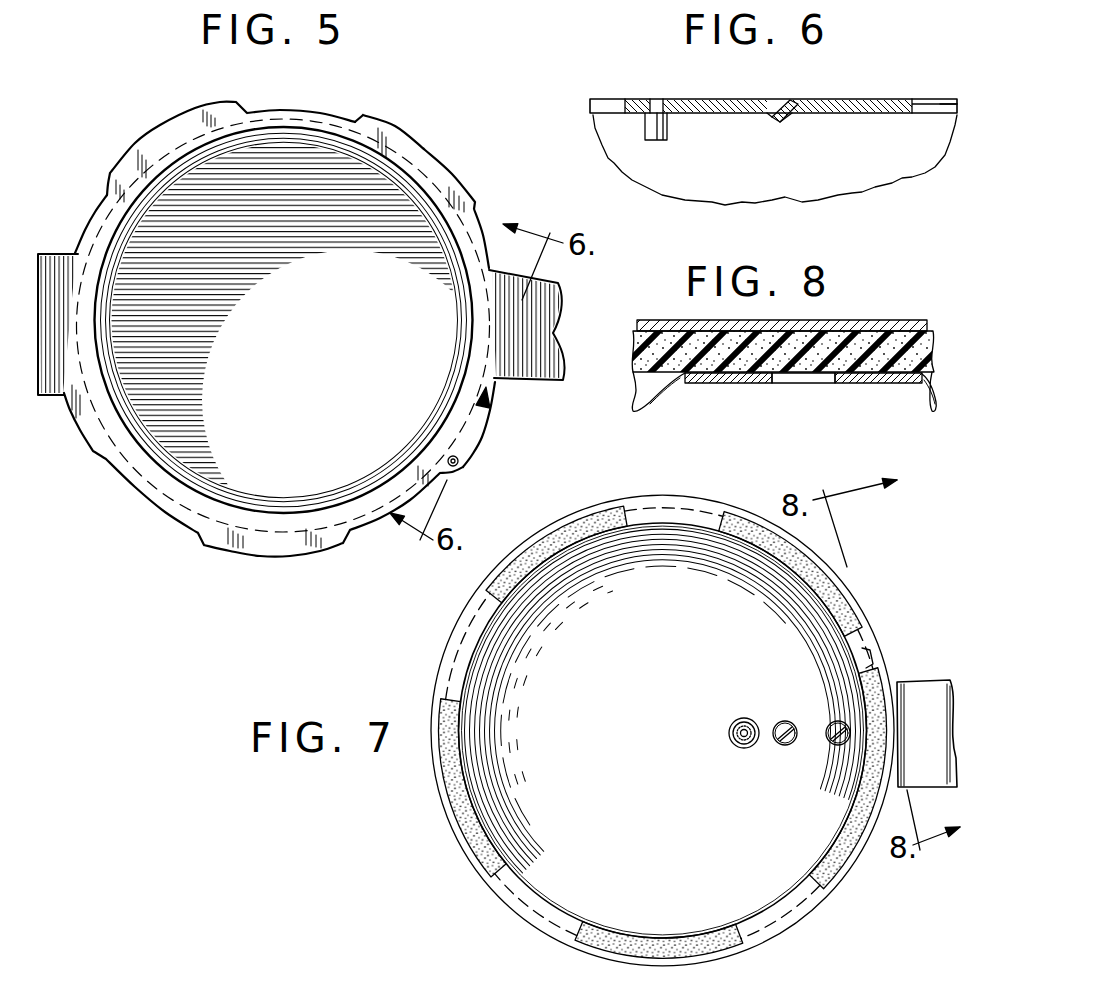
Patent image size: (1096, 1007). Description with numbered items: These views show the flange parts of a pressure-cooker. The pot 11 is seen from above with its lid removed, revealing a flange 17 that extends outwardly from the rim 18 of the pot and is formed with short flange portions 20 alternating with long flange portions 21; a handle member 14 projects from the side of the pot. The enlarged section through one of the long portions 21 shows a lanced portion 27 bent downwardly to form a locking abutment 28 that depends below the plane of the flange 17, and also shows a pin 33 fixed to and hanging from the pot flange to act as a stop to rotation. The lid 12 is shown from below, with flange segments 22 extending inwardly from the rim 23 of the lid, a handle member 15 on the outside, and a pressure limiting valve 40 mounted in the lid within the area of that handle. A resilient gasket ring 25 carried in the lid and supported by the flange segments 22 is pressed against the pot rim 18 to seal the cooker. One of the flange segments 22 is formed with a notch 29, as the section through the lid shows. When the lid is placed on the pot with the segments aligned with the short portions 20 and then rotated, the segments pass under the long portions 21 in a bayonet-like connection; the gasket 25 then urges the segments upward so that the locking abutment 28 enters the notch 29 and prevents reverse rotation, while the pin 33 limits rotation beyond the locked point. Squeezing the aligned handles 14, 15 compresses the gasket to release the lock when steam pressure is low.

In FIG. 5, the pot 11 is at (147, 248).
In FIG. 8, the lid 12 is at (632, 402).
In FIG. 7, the lid 12 is at (462, 768).
In FIG. 5, the handle member 14 is at (537, 380).
In FIG. 7, the handle member 15 is at (915, 690).
In FIG. 5, the flange 17 is at (105, 461).
In FIG. 6, the flange 17 is at (920, 96).
In FIG. 5, the rim 18 is at (156, 472).
In FIG. 5, the short flange portion 20 is at (163, 512).
In FIG. 5, the long flange portion 21 is at (162, 145).
In FIG. 6, the long flange portion 21 is at (866, 101).
In FIG. 8, the flange segment 22 is at (727, 385).
In FIG. 7, the flange segment 22 is at (671, 508).
In FIG. 7, the rim 23 is at (456, 838).
In FIG. 8, the resilient gasket ring 25 is at (847, 345).
In FIG. 7, the resilient gasket ring 25 is at (694, 962).
In FIG. 5, the lanced portion 27 is at (487, 402).
In FIG. 6, the lanced portion 27 is at (790, 100).
In FIG. 6, the locking abutment 28 is at (782, 118).
In FIG. 8, the notch 29 is at (795, 385).
In FIG. 7, the notch 29 is at (868, 652).
In FIG. 5, the pin 33 is at (458, 462).
In FIG. 6, the pin 33 is at (661, 140).
In FIG. 7, the pressure limiting valve 40 is at (732, 745).